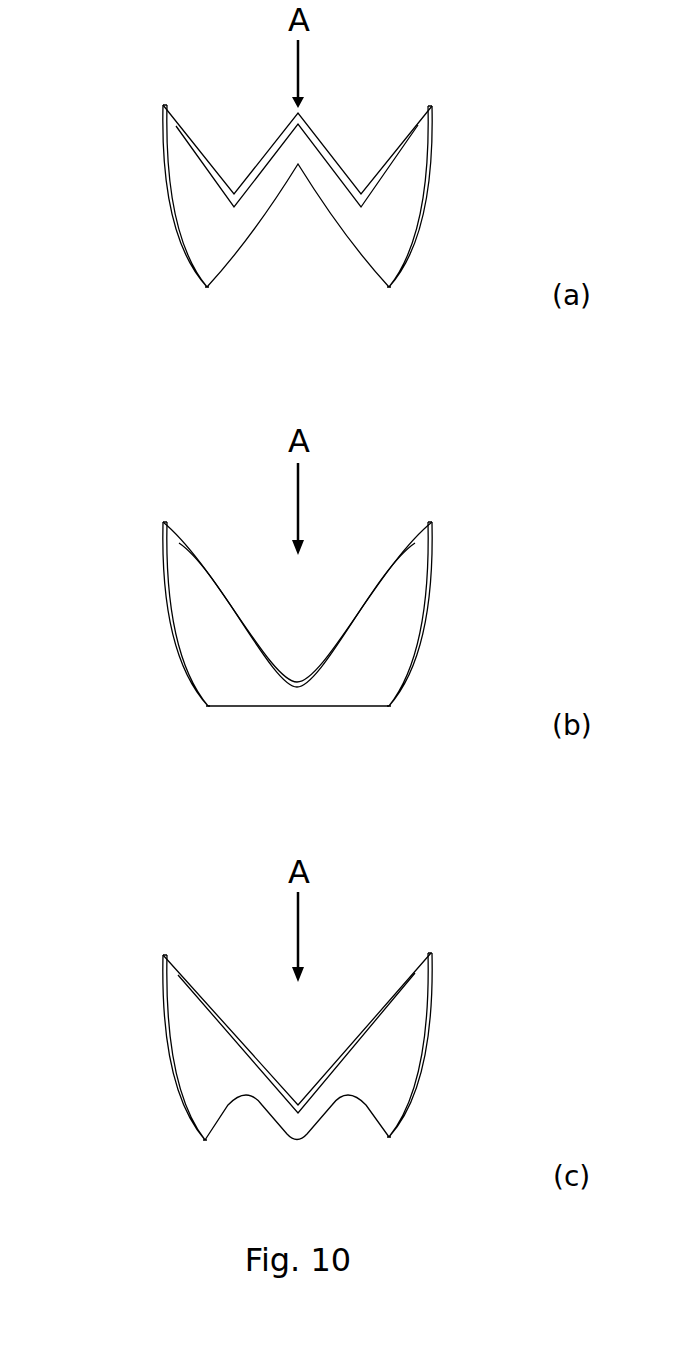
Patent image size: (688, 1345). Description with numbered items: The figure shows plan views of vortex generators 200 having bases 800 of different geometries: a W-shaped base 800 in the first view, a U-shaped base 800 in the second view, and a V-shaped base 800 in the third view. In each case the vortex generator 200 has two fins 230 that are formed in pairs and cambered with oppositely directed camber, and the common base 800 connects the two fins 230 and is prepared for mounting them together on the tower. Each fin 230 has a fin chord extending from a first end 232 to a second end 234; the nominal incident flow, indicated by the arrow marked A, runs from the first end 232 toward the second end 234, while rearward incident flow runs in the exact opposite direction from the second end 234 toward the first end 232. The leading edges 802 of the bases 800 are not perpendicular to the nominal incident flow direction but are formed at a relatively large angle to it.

The vortex generator 200 is at (448, 80).
The fin 230 is at (168, 207).
The first end 232 is at (163, 105).
The second end 234 is at (206, 289).
The base 800 is at (237, 237).
The leading edge 802 is at (188, 137).